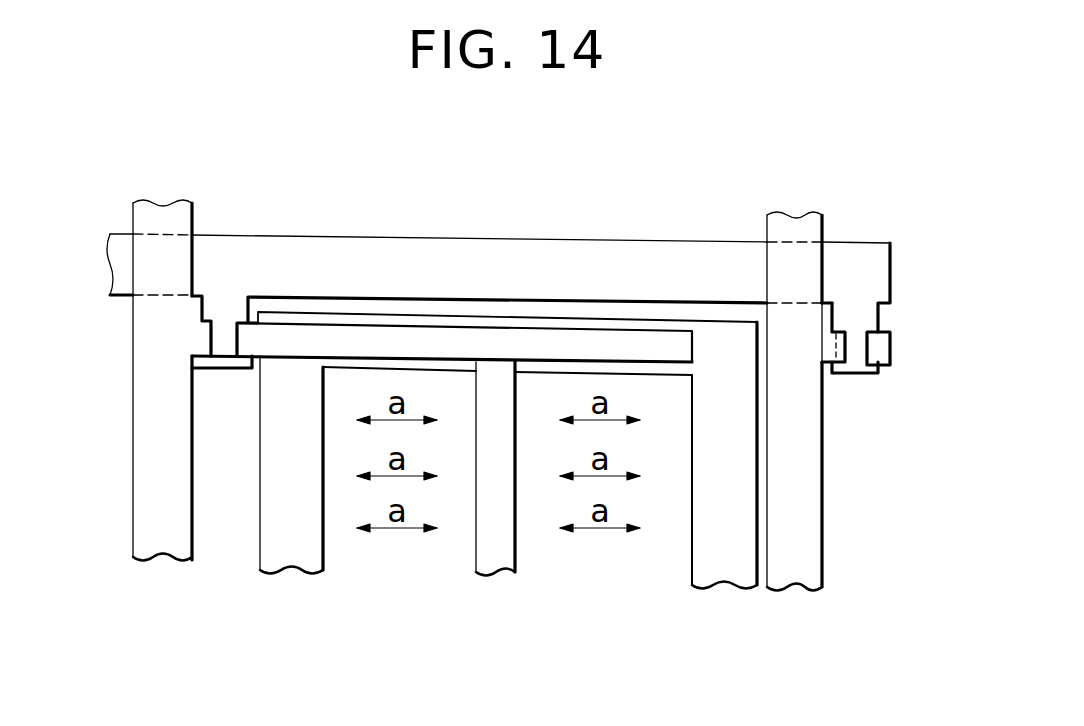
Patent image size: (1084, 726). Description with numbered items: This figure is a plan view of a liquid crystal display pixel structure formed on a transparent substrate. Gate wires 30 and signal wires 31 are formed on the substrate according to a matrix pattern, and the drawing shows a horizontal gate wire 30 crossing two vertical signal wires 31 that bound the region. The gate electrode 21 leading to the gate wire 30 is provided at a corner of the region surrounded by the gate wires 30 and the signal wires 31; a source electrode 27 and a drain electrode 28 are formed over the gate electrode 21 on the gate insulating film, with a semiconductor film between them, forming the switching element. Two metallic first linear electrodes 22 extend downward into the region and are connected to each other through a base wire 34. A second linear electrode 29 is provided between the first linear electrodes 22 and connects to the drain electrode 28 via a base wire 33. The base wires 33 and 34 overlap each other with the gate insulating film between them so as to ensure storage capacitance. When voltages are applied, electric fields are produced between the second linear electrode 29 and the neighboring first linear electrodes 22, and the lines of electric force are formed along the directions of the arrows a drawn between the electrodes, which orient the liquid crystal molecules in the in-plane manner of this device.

The gate electrode 21 is at (218, 366).
The first linear electrodes 22 is at (297, 558).
The source electrode 27 is at (206, 338).
The drain electrode 28 is at (243, 343).
The second linear electrode 29 is at (493, 572).
The gate wire 30 is at (657, 262).
The signal wire 31 is at (145, 462).
The base wire 33 is at (402, 345).
The base wire 34 is at (566, 330).